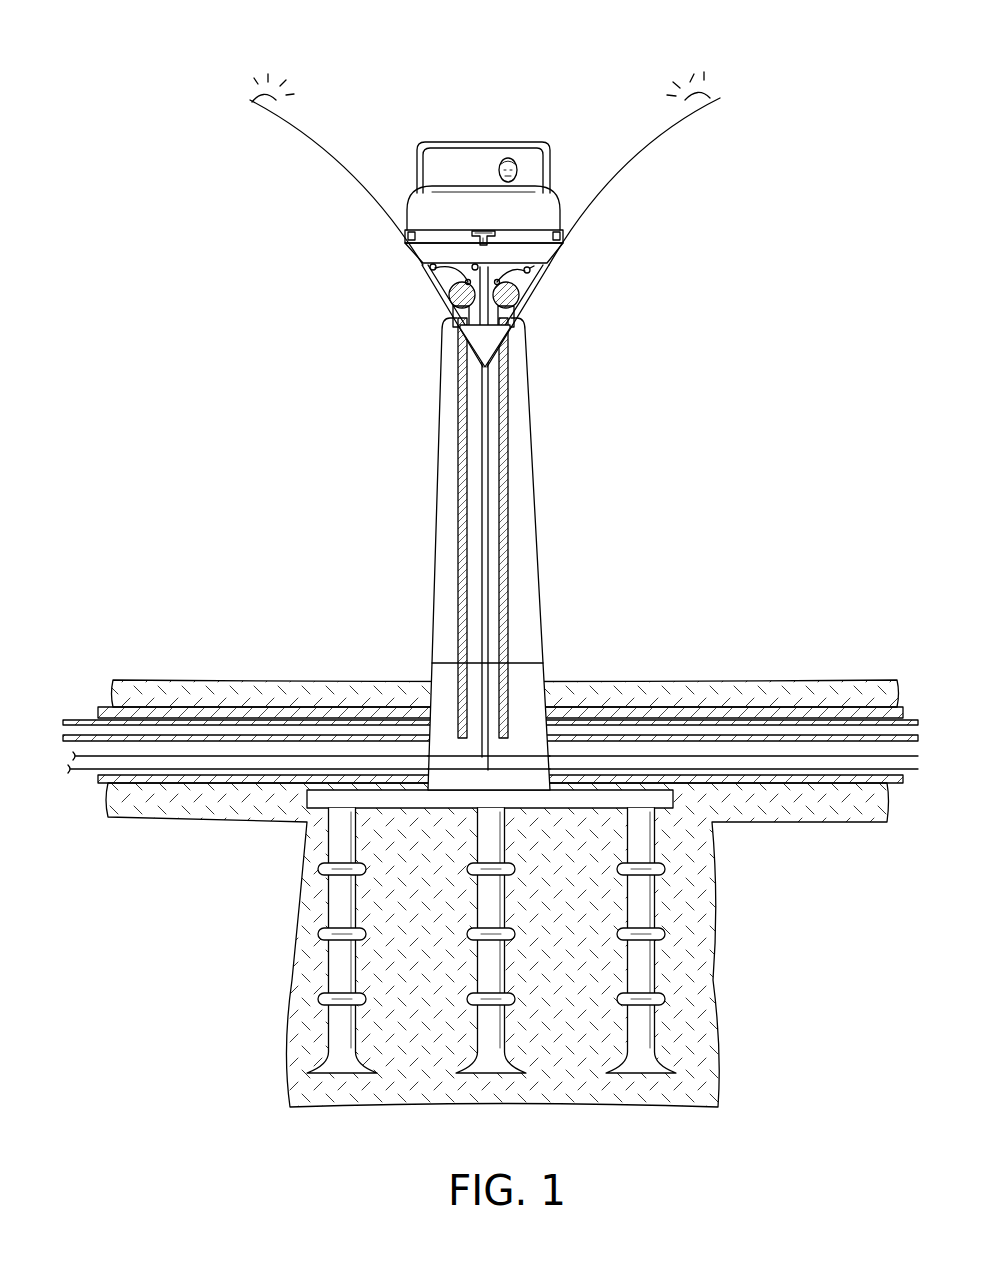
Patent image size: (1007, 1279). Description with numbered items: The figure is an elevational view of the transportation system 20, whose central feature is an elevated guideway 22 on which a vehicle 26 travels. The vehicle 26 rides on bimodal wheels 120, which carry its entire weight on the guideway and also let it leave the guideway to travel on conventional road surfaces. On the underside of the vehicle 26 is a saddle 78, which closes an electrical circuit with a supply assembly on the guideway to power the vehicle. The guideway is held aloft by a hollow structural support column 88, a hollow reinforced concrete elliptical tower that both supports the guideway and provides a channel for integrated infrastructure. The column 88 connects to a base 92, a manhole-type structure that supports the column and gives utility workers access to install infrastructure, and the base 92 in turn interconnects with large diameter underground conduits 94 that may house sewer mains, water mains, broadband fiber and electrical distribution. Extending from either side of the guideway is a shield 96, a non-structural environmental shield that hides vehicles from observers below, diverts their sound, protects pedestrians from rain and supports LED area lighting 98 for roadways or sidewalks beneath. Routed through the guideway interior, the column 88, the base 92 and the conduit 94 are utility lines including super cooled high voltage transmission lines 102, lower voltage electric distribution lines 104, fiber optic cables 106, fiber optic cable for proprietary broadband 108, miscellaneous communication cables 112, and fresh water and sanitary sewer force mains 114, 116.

The transportation system 20 is at (573, 223).
The elevated guideway 22 is at (513, 302).
The vehicle 26 is at (477, 140).
The saddle 78 is at (490, 232).
The hollow structural support column 88 is at (532, 503).
The base opening 92 is at (527, 678).
The large diameter underground conduit 94 is at (740, 713).
The shield 96 is at (330, 147).
The LED area lighting 98 is at (263, 95).
The super cooled high voltage transmission lines 102 is at (423, 272).
The lower voltage electric distribution lines 104 is at (437, 293).
The fiber optic cables 106 is at (485, 330).
The fiber optic cable for proprietary broadband 108 is at (540, 282).
The miscellaneous communication cables 112 is at (530, 272).
The fresh water main 114 is at (453, 297).
The sanitary sewer force main 116 is at (527, 302).
The bimodal wheels 120 is at (407, 217).